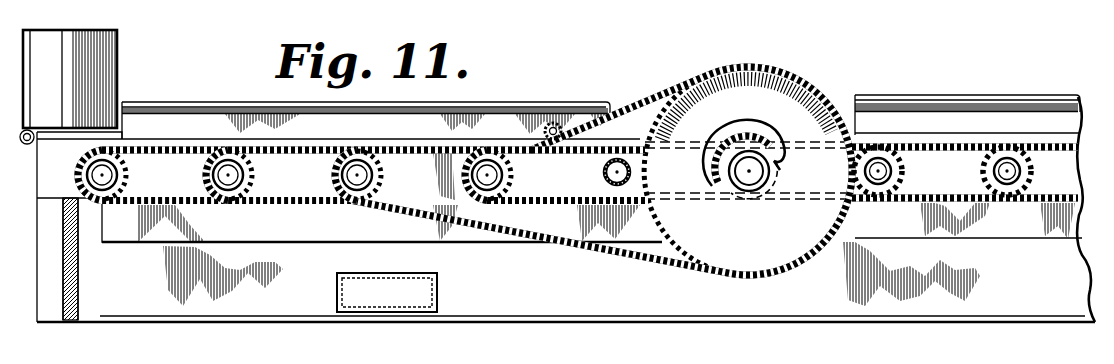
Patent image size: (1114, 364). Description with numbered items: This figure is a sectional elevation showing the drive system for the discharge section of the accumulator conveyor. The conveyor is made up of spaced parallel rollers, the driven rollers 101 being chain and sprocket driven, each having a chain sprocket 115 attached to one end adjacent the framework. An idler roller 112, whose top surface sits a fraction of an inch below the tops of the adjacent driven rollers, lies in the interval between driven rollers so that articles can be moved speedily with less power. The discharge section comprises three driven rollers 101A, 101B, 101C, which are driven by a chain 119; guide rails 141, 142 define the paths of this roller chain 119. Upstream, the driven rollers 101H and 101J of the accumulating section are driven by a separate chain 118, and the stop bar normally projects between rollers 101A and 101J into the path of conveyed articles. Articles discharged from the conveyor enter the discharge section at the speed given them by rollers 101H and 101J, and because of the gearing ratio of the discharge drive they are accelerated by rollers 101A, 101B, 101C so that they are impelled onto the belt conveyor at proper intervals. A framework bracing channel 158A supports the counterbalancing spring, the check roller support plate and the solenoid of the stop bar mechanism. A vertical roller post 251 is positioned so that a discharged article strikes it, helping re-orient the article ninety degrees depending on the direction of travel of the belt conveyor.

The vertical roller post 251 is at (96, 43).
The driven roller 101C is at (116, 162).
The driven roller 101B is at (228, 160).
The driven roller 101A is at (359, 172).
The driven roller 101J is at (506, 180).
The driven roller 101H is at (890, 152).
The driven roller 101 is at (1010, 152).
The chain 119 is at (190, 150).
The guide rail 141 is at (397, 127).
The guide rail 142 is at (422, 231).
The idler roller 112 is at (603, 168).
The chain sprocket 115 is at (898, 168).
The chain 118 is at (1052, 208).
The framework bracing channel 158A is at (440, 290).